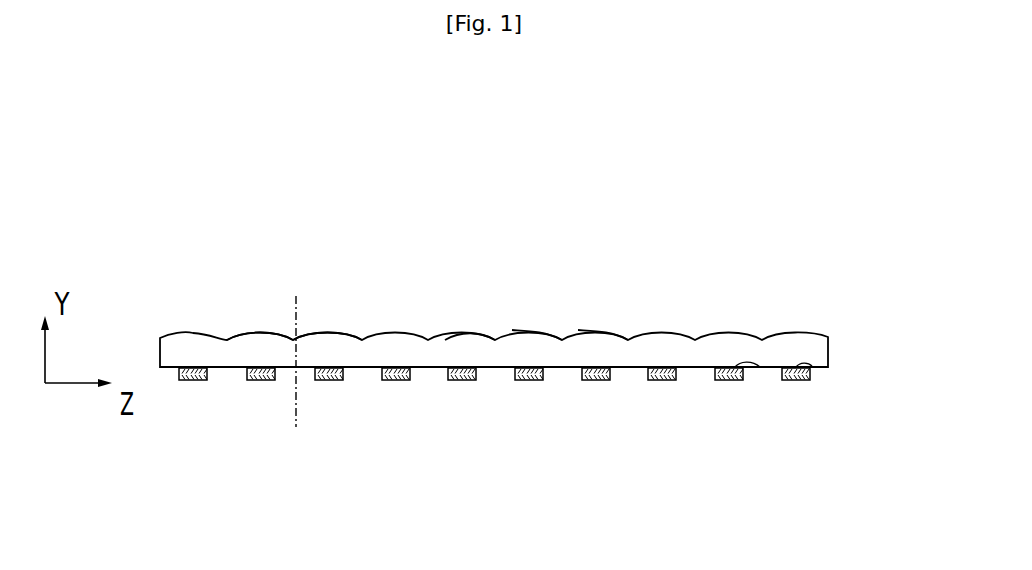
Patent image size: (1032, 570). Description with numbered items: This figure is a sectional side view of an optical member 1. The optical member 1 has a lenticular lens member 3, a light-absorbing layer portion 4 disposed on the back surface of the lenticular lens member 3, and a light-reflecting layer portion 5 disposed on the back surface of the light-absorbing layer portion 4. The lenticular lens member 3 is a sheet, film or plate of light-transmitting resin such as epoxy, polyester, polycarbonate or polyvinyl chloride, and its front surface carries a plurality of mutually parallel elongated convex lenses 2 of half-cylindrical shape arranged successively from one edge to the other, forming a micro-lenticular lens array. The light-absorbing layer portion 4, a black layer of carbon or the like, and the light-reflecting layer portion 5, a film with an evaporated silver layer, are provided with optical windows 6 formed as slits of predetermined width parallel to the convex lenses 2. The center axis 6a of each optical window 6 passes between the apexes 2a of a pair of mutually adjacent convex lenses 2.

The optical member 1 is at (514, 315).
The convex lens 2 is at (465, 335).
The apex 2a is at (258, 333).
The lenticular lens member 3 is at (820, 337).
The light-absorbing layer portion 4 is at (800, 366).
The light-reflecting layer portion 5 is at (730, 381).
The optical window 6 is at (500, 368).
The center axis 6a is at (298, 316).